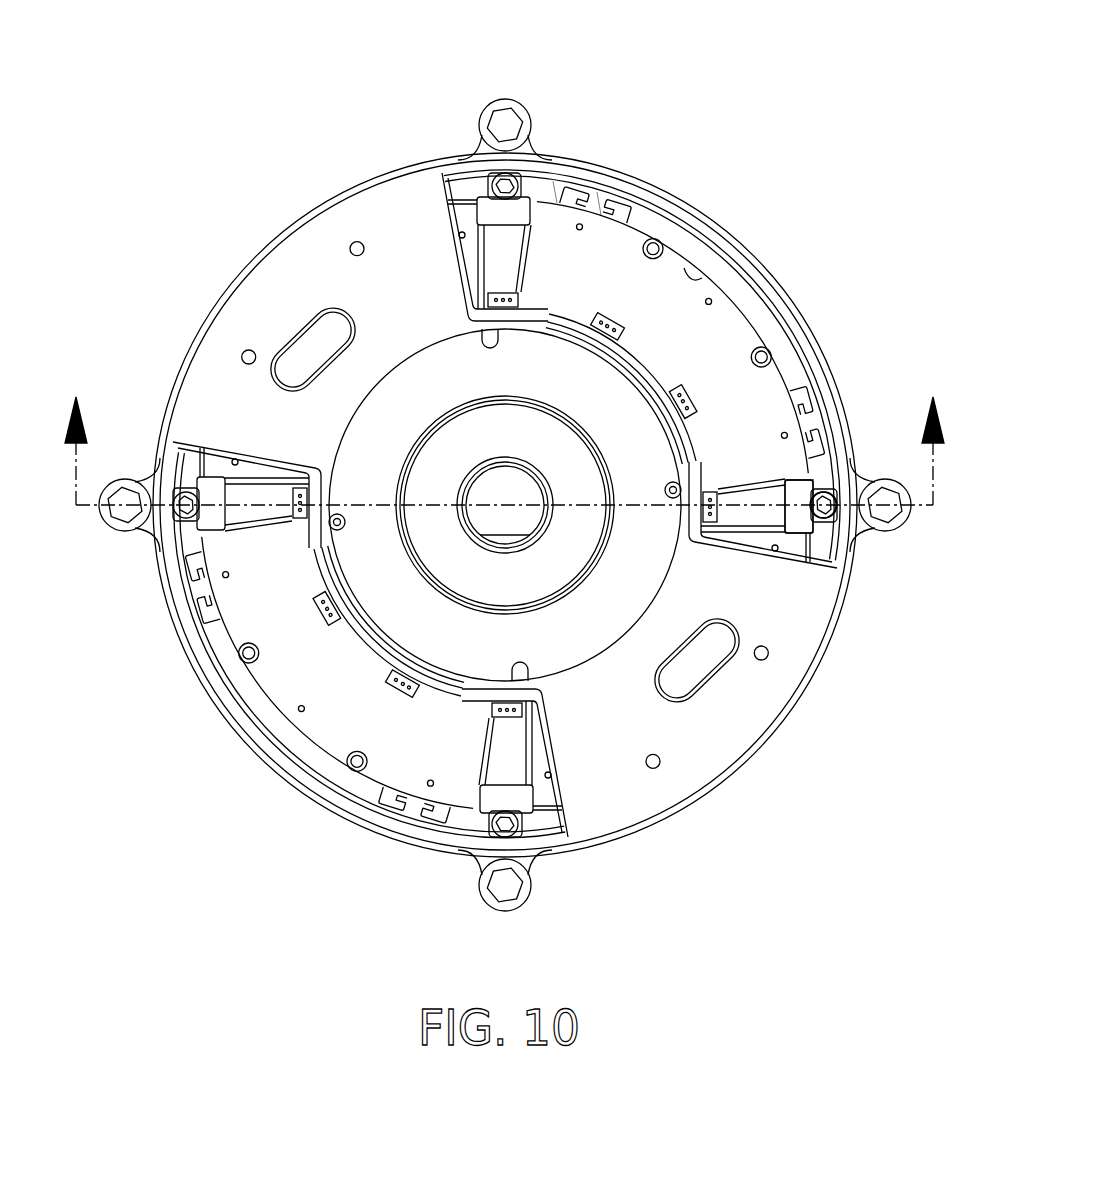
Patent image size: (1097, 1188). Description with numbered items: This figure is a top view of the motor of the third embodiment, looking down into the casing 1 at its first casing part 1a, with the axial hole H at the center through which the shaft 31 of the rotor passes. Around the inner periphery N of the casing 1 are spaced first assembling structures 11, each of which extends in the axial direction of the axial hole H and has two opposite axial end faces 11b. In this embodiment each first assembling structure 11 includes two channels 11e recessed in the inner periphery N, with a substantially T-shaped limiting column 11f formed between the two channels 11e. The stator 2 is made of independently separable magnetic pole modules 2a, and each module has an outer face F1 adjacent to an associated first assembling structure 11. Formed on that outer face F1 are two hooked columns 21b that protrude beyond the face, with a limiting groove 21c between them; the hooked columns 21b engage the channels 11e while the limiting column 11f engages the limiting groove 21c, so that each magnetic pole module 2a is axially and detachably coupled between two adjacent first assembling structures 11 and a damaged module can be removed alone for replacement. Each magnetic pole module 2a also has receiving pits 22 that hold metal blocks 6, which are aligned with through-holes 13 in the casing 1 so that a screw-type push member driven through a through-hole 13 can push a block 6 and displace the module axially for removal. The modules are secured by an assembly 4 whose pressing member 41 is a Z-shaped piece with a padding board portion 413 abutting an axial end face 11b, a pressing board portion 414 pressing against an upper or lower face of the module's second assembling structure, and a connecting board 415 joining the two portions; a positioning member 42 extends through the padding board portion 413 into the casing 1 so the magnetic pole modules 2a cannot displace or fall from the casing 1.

The casing 1 is at (505, 498).
The first casing part 1a is at (647, 183).
The stator 2 is at (310, 770).
The magnetic pole module 2a is at (493, 252).
The clamping unit 4 is at (832, 564).
The block 6 is at (729, 309).
The receiving pit 22 is at (657, 243).
The first assembling structure 11 is at (503, 417).
The axial end face 11b is at (768, 300).
The channel 11e is at (609, 110).
The limiting column 11f is at (732, 120).
The hooked column 21b is at (588, 203).
The limiting groove 21c is at (593, 200).
The through-hole 13 is at (765, 660).
The shaft 31 is at (482, 460).
The axial hole H is at (429, 347).
The inner periphery N is at (769, 243).
The outer face F1 is at (692, 272).
The pressing member 41 is at (832, 564).
The positioning member 42 is at (830, 520).
The padding board portion 413 is at (825, 540).
The pressing board portion 414 is at (768, 512).
The connecting board 415 is at (810, 512).